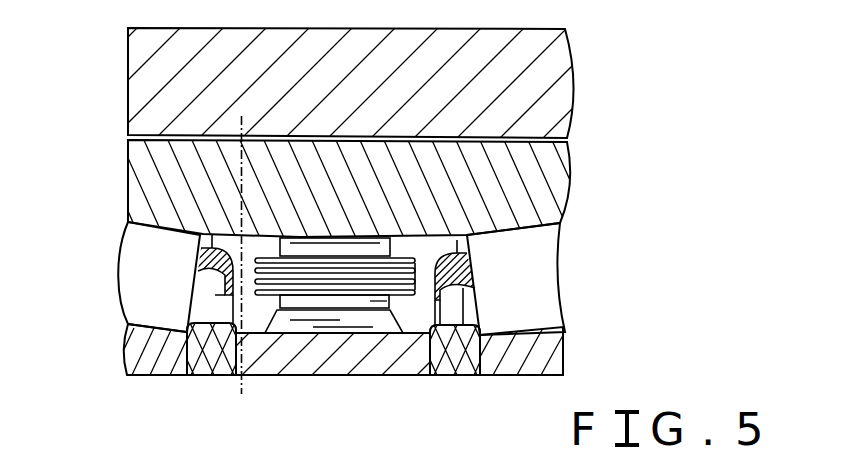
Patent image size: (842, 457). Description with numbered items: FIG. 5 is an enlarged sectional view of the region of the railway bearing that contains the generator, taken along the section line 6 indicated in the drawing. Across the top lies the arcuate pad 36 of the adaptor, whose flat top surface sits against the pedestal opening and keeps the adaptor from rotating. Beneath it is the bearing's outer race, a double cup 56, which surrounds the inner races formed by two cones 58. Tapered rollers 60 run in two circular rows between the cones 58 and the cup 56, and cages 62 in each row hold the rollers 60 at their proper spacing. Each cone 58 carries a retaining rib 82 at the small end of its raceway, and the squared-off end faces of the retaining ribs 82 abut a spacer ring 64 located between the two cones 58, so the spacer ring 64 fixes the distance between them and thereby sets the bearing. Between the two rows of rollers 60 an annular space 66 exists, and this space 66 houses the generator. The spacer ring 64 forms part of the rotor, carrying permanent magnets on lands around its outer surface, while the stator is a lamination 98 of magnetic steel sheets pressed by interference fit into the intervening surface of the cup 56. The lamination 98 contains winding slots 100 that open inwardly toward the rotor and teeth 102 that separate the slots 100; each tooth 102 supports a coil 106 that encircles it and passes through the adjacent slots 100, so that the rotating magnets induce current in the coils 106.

The pad 36 is at (509, 93).
The double cup 56 is at (183, 183).
The tapered rollers 60 is at (140, 286).
The cones 58 is at (157, 347).
The retaining rib 82 is at (197, 380).
The cages 62 is at (235, 375).
The spacer ring 64 is at (323, 358).
The annular space 66 is at (425, 273).
The lamination 98 is at (372, 243).
The teeth 102 is at (373, 300).
The coil 106 is at (340, 287).
The winding slots 100 is at (345, 416).
The section line 6- 6 is at (261, 112).